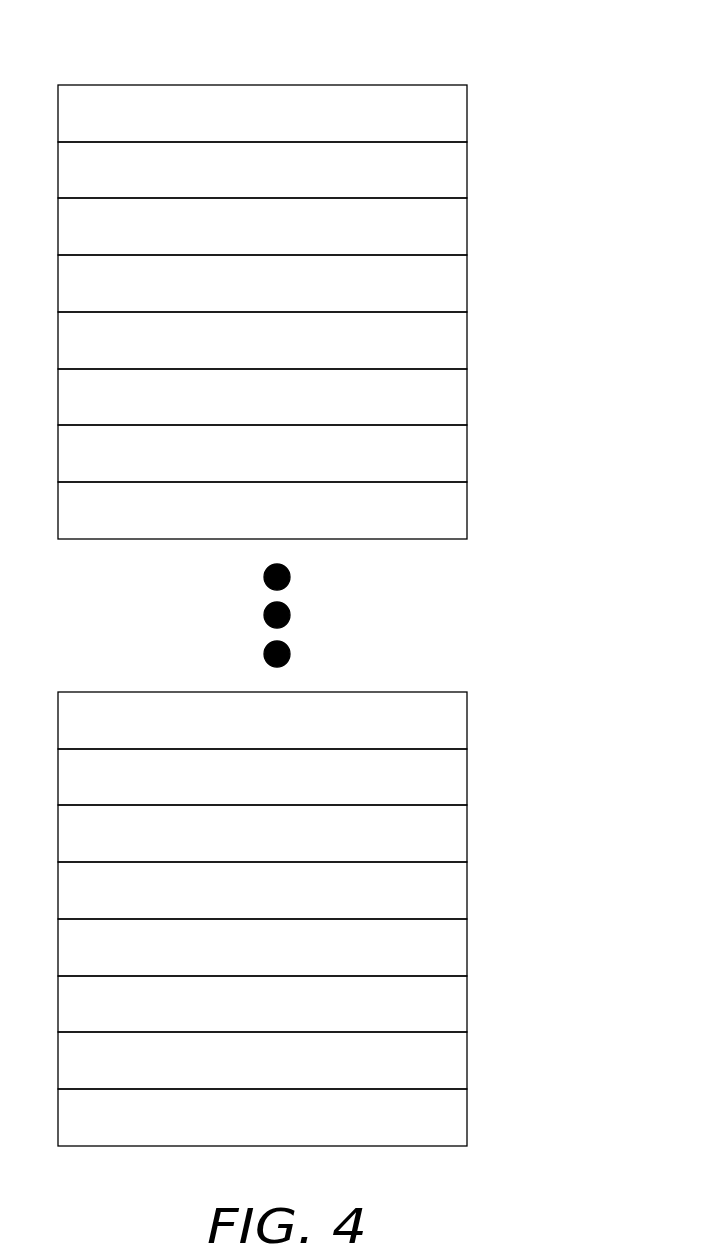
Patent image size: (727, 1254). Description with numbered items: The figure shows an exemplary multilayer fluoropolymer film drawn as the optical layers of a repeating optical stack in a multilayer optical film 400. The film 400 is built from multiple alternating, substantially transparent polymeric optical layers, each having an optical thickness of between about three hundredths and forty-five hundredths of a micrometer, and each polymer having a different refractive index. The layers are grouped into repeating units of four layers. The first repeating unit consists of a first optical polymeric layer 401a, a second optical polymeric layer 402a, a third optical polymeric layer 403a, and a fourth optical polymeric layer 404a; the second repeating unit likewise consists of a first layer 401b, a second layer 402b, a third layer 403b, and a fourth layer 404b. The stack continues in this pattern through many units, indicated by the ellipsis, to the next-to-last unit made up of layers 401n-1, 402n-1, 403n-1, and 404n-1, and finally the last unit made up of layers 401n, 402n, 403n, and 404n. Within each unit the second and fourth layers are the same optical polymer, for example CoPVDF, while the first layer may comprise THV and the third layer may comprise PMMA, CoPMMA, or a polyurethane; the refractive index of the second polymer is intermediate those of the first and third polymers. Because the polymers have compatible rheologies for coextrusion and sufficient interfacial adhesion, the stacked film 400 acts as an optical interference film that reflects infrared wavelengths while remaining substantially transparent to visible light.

The multilayer optical film 400 is at (513, 49).
The first optical polymeric layer 401a is at (447, 113).
The second optical polymeric layer 402a is at (447, 170).
The third optical polymeric layer 403a is at (447, 227).
The fourth optical polymeric layer 404a is at (447, 284).
The first optical polymeric layer 401b is at (447, 340).
The second optical polymeric layer 402b is at (447, 397).
The third optical polymeric layer 403b is at (447, 454).
The fourth optical polymeric layer 404b is at (447, 510).
The first optical polymeric layer 401n-1 is at (447, 720).
The second optical polymeric layer 402n-1 is at (447, 777).
The third optical polymeric layer 403n-1 is at (447, 834).
The fourth optical polymeric layer 404n-1 is at (447, 891).
The first optical polymeric layer 401n is at (447, 947).
The second optical polymeric layer 402n is at (447, 1004).
The third optical polymeric layer 403n is at (447, 1061).
The fourth optical polymeric layer 404n is at (447, 1118).